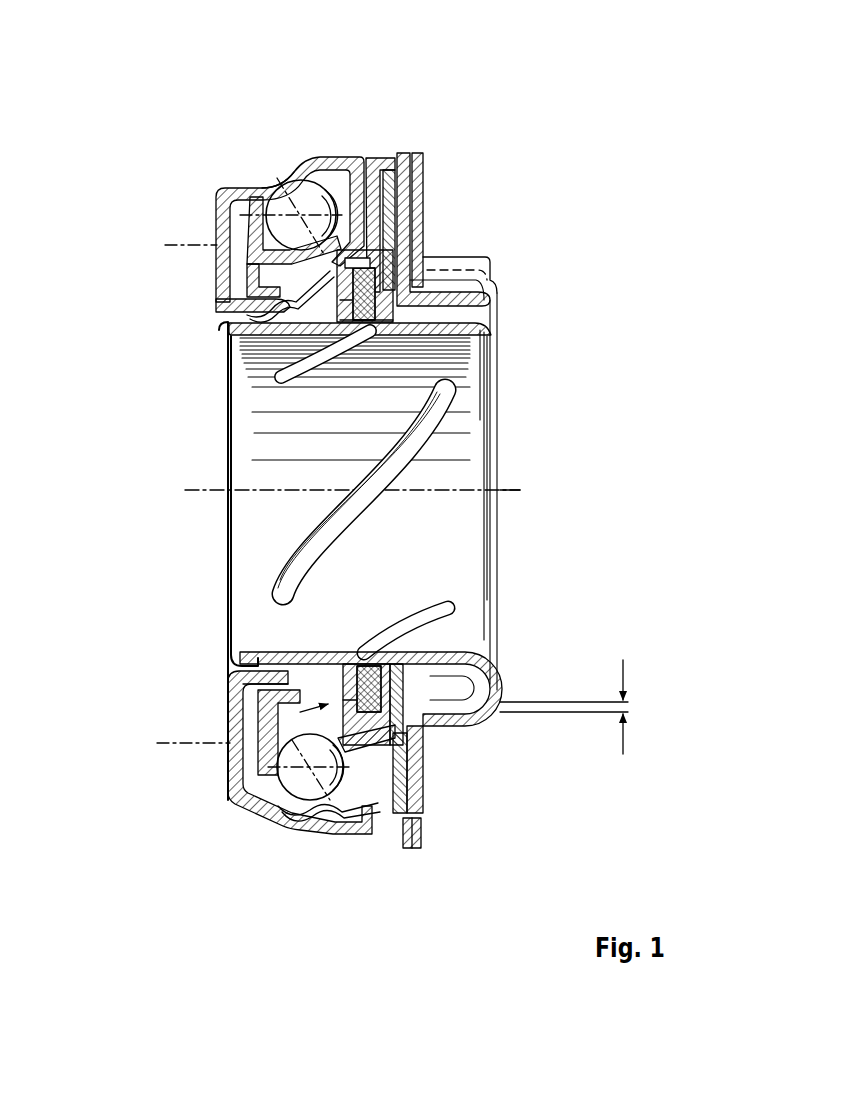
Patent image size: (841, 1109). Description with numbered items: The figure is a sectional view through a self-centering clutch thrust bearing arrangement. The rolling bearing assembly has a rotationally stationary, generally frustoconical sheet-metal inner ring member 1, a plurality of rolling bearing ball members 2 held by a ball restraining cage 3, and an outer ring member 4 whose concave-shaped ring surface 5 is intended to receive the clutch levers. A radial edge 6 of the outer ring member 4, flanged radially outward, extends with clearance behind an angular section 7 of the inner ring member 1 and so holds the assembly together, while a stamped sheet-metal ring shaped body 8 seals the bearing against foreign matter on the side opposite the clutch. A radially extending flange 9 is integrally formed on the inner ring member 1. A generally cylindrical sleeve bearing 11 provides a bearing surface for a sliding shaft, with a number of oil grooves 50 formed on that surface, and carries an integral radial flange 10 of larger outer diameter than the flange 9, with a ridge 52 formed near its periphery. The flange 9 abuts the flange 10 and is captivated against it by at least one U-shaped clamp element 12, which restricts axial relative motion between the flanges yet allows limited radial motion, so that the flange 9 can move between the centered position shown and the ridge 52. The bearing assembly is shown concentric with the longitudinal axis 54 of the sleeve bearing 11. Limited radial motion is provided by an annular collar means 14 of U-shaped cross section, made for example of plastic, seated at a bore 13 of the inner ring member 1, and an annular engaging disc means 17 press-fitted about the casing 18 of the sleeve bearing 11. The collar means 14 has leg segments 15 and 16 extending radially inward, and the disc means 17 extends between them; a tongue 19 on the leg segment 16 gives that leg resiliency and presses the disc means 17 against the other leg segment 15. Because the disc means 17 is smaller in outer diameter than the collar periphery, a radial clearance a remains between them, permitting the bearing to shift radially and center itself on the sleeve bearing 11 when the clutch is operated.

The inner ring member 1 is at (313, 275).
The rolling bearing ball members 2 is at (297, 182).
The ball restraining cage 3 is at (235, 186).
The outer ring member 4 is at (259, 182).
The concave-shaped ring surface 5 is at (218, 228).
The radial edge 6 is at (247, 315).
The angular section 7 is at (247, 287).
The sheet-metal ring shaped body 8 is at (359, 154).
The radially extending flange 9 is at (423, 792).
The flange 10 is at (421, 776).
The sleeve bearing 11 is at (490, 330).
The clamp element 12 is at (423, 153).
The bore 13 is at (427, 733).
The annular collar means 14 is at (273, 712).
The leg segment 15 is at (327, 652).
The leg segment 16 is at (415, 708).
The annular engaging disc means 17 is at (395, 663).
The casing 18 is at (247, 675).
The tongue 19 is at (405, 690).
The oil grooves 50 is at (343, 543).
The ridge 52 is at (405, 828).
The longitudinal axis 54 is at (508, 488).
The radial clearance a is at (573, 707).